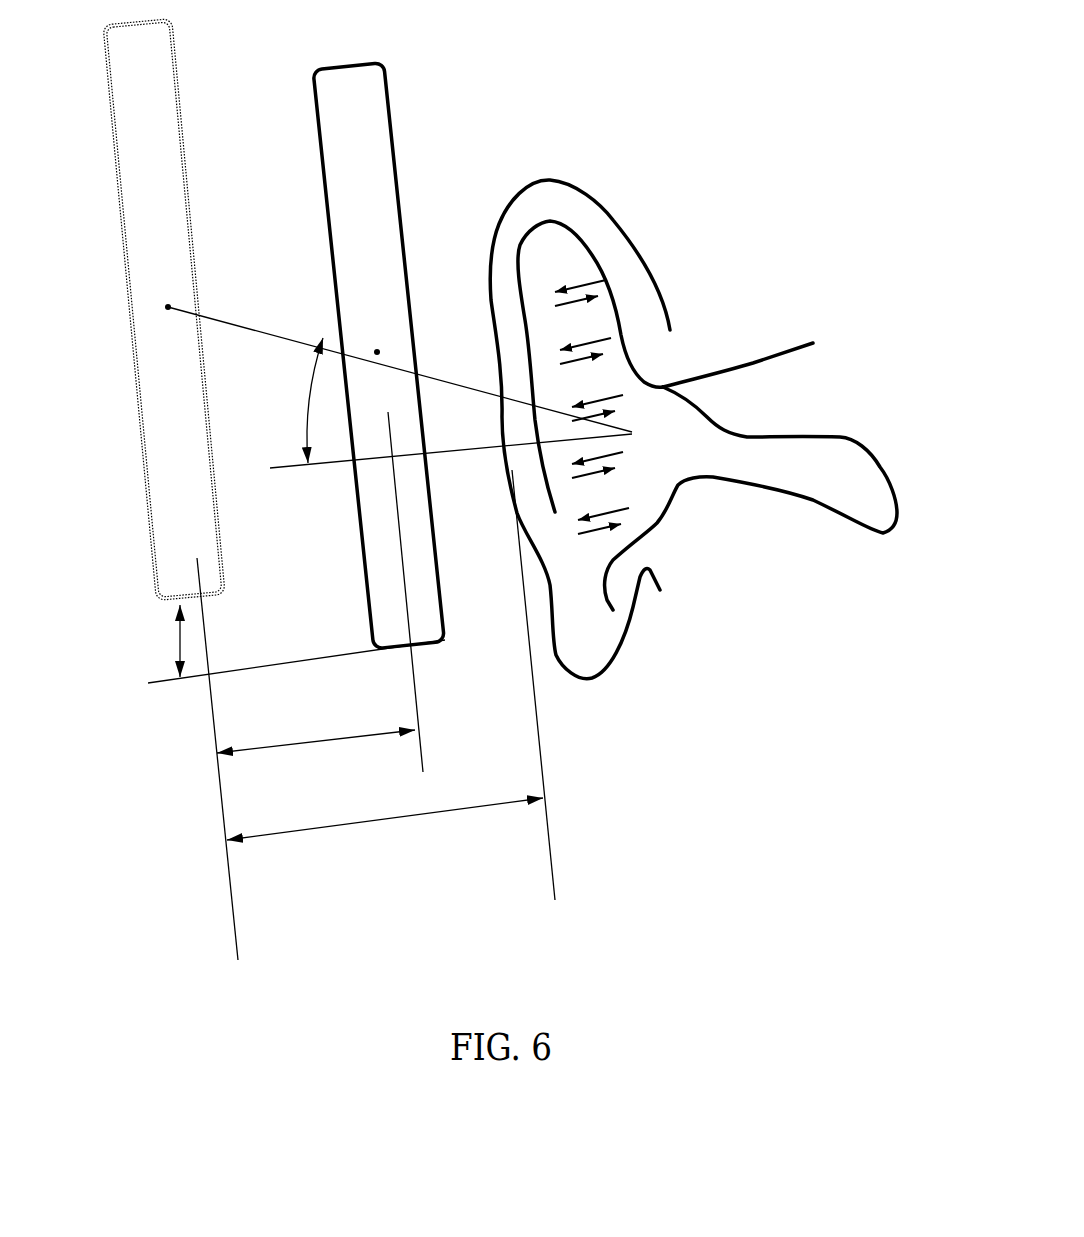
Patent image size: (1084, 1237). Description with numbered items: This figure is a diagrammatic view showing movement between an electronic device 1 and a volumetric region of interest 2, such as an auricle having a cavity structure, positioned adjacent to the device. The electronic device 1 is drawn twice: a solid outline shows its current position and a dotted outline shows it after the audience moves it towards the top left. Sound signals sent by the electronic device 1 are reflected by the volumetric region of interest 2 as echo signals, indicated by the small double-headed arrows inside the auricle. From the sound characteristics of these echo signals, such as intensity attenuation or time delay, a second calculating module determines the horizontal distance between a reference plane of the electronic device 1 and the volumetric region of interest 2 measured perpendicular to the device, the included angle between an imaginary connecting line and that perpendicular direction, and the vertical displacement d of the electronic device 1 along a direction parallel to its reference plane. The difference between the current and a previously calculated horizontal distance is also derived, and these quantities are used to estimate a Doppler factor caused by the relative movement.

The electronic device 1 is at (358, 178).
The volumetric region of interest 2 is at (595, 200).
The vertical displacement d is at (295, 644).